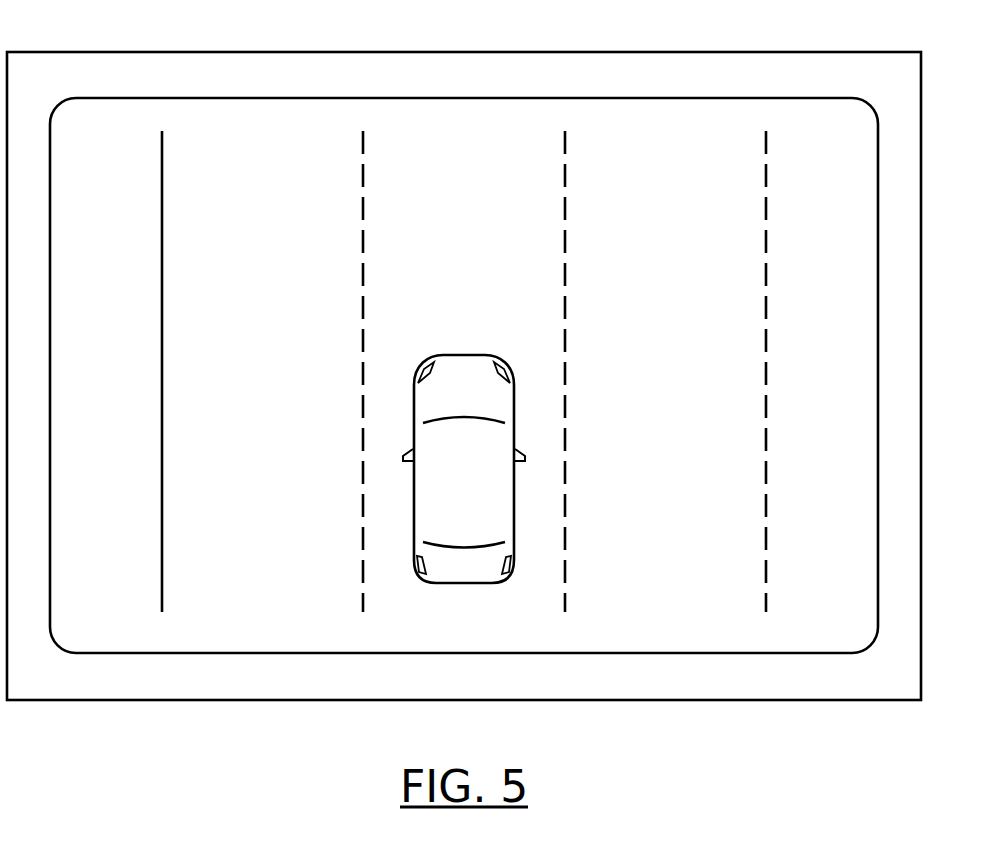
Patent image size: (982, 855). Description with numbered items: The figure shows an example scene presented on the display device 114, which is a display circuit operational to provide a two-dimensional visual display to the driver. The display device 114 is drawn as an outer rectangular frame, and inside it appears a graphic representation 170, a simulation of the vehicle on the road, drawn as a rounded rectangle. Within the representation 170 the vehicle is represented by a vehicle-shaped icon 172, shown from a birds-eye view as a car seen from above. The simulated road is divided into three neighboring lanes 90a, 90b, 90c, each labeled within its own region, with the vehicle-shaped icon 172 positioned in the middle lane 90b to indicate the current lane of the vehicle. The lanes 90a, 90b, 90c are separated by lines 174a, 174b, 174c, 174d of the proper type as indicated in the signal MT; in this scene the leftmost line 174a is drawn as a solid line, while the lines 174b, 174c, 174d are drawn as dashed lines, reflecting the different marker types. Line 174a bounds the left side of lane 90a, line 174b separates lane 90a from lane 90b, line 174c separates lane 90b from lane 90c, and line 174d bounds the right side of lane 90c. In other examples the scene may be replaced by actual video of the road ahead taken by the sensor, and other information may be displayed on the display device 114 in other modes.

The display device 114 is at (137, 52).
The graphic representation 170 is at (248, 98).
The vehicle-shaped icon 172 is at (458, 354).
The lane 90a is at (283, 231).
The lane 90b is at (484, 231).
The lane 90c is at (686, 231).
The line 174a is at (162, 550).
The line 174b is at (363, 550).
The line 174c is at (566, 550).
The line 174d is at (765, 550).